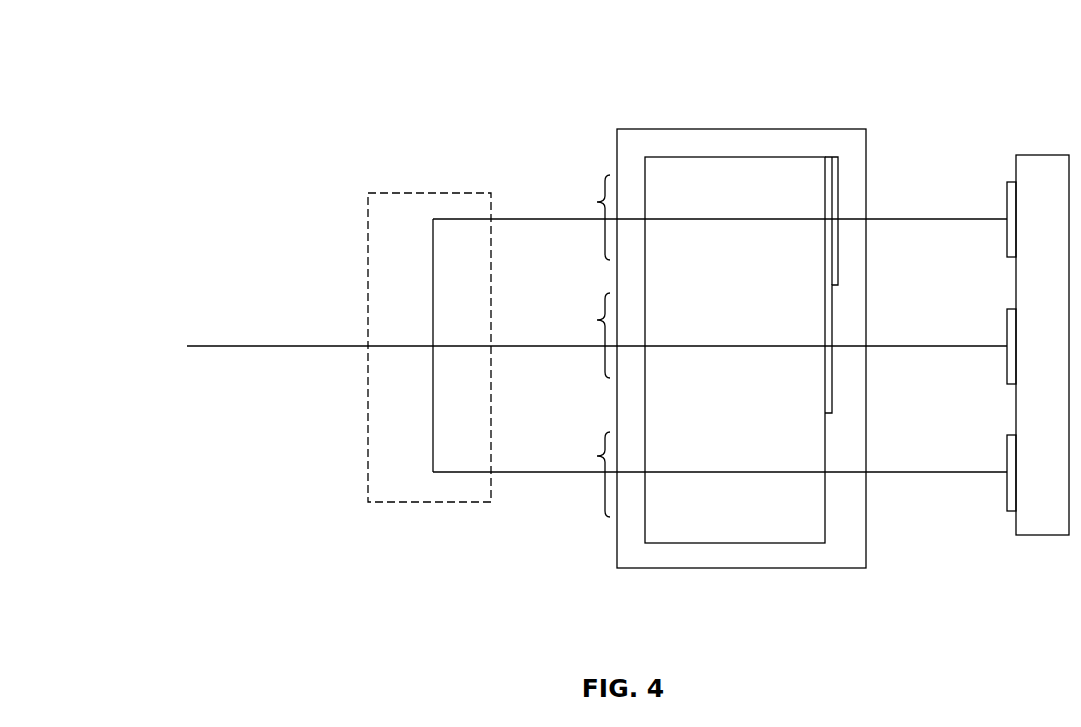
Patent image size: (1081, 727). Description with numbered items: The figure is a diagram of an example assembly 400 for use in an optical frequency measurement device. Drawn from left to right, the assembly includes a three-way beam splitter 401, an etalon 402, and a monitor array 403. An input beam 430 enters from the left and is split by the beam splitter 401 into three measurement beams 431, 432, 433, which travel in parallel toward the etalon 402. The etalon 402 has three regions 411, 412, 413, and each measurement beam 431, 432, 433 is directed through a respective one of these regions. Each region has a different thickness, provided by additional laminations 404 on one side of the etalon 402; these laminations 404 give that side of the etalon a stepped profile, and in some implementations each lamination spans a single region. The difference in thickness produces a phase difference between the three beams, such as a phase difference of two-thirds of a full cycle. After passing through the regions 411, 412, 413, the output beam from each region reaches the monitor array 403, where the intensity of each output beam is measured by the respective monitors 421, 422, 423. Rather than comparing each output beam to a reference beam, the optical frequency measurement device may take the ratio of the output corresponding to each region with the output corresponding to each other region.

The assembly 400 is at (252, 40).
The 3-way beam splitter 401 is at (368, 208).
The etalon 402 is at (735, 544).
The monitor array 403 is at (1045, 536).
The laminations 404 is at (842, 262).
The region 411 is at (584, 217).
The region 412 is at (584, 335).
The region 413 is at (584, 474).
The monitor 421 is at (1005, 228).
The monitor 422 is at (1005, 353).
The monitor 423 is at (1005, 491).
The input beam 430 is at (262, 347).
The measurement beam 431 is at (536, 220).
The measurement beam 432 is at (536, 347).
The measurement beam 433 is at (533, 473).